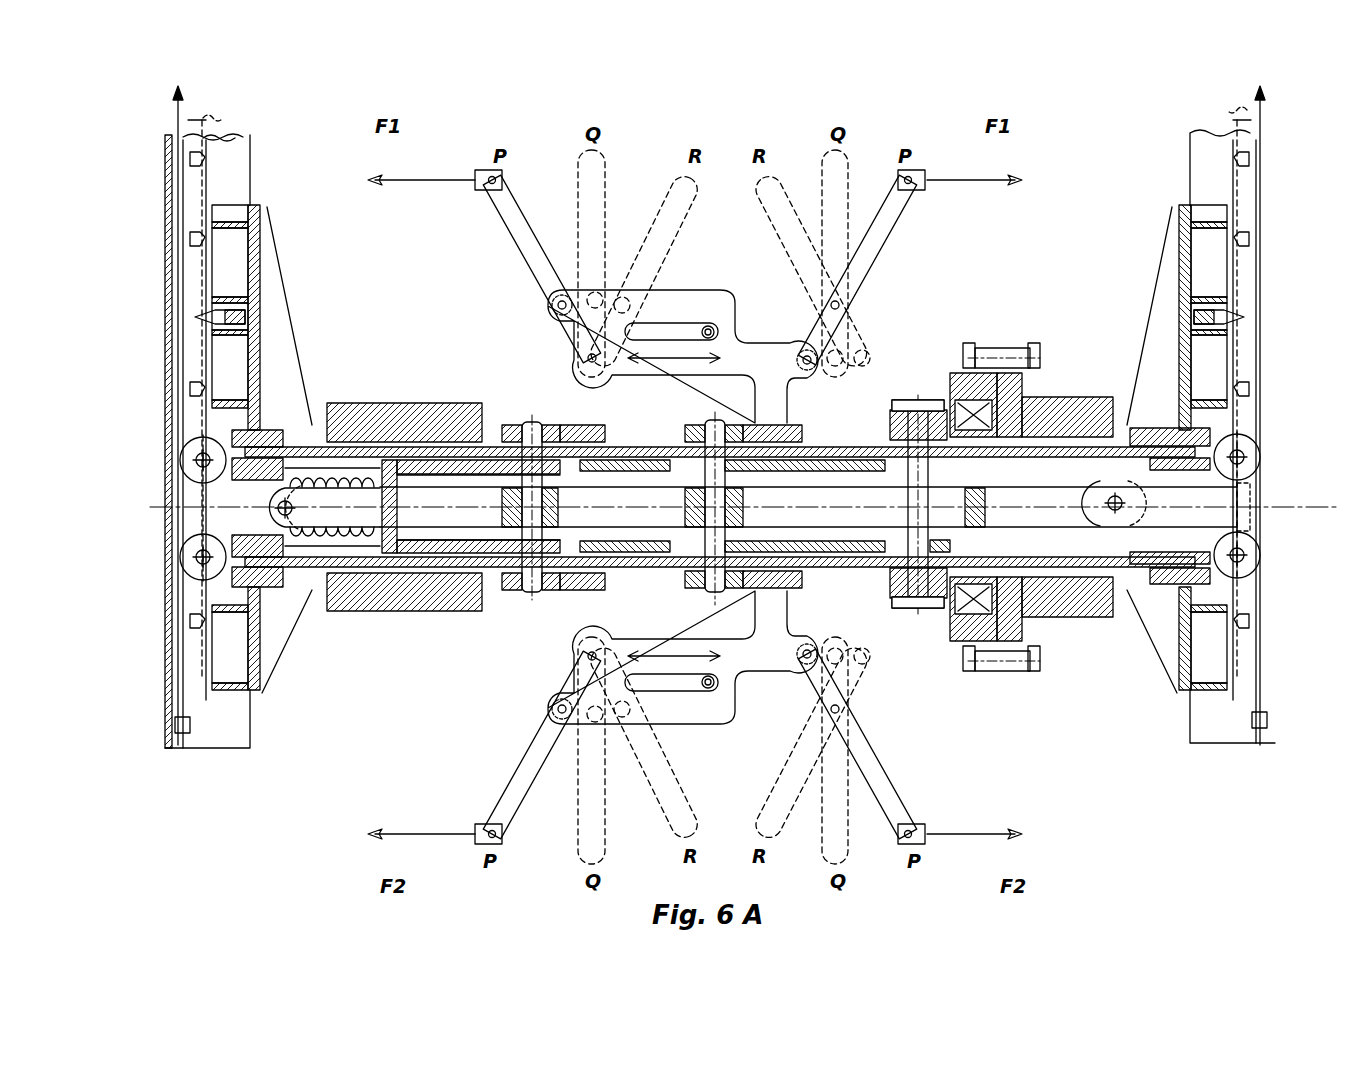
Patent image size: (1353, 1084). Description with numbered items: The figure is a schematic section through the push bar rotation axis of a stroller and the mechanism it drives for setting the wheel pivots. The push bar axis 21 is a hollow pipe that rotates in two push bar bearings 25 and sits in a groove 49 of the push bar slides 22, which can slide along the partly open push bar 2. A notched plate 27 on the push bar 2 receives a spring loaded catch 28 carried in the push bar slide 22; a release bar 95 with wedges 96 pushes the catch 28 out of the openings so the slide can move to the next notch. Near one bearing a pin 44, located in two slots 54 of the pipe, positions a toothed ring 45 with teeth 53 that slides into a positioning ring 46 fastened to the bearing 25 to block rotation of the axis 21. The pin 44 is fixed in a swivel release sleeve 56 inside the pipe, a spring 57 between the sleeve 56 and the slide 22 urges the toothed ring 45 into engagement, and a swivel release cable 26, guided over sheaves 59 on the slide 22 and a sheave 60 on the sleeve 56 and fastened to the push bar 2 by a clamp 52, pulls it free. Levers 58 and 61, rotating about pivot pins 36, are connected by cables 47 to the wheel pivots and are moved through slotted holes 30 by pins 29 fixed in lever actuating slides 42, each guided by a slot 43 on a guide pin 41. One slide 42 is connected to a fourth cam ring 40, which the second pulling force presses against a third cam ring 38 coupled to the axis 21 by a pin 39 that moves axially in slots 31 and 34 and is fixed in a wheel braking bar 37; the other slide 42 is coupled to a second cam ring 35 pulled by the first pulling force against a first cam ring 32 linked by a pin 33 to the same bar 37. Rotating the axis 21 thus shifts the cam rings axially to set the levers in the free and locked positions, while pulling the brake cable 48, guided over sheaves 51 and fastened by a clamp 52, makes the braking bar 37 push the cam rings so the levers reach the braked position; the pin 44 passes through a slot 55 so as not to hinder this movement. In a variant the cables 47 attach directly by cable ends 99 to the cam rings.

The push bar 2 is at (225, 163).
The push bar axis 21 is at (335, 440).
The push bar slide 22 is at (258, 270).
The push bar bearing 25 is at (1068, 412).
The swivel release cable 26 is at (175, 102).
The notched plate 27 is at (195, 264).
The spring loaded catch 28 is at (200, 316).
The pin 29 is at (556, 305).
The slotted hole 30 is at (567, 315).
The slot 31 is at (492, 475).
The first cam ring 32 is at (514, 468).
The pin 33 is at (537, 430).
The slot 34 is at (570, 432).
The second cam ring 35 is at (615, 470).
The pivot pin 36 is at (585, 355).
The wheel braking bar 37 is at (655, 500).
The third cam ring 38 is at (692, 426).
The pin 39 is at (716, 425).
The fourth cam ring 40 is at (787, 426).
The guide pin 41 is at (708, 325).
The lever actuating slide 42 is at (725, 295).
The slot 43 is at (680, 330).
The pin 44 is at (912, 428).
The toothed ring 45 is at (918, 412).
The positioning ring 46 is at (960, 380).
The cable 47 is at (433, 180).
The brake cable 48 is at (1168, 525).
The groove 49 is at (1160, 455).
The sheave 51 is at (1255, 474).
The clamp 52 is at (175, 723).
The teeth 53 is at (900, 600).
The slot 54 is at (945, 560).
The slot 55 is at (948, 495).
The swivel release sleeve 56 is at (457, 590).
The spring 57 is at (360, 565).
The lever 58 is at (518, 236).
The sheave 59 is at (182, 458).
The sheave 60 is at (270, 498).
The lever 61 is at (513, 766).
The release bar 95 is at (200, 110).
The wedge 96 is at (206, 138).
The cable end 99 is at (480, 168).